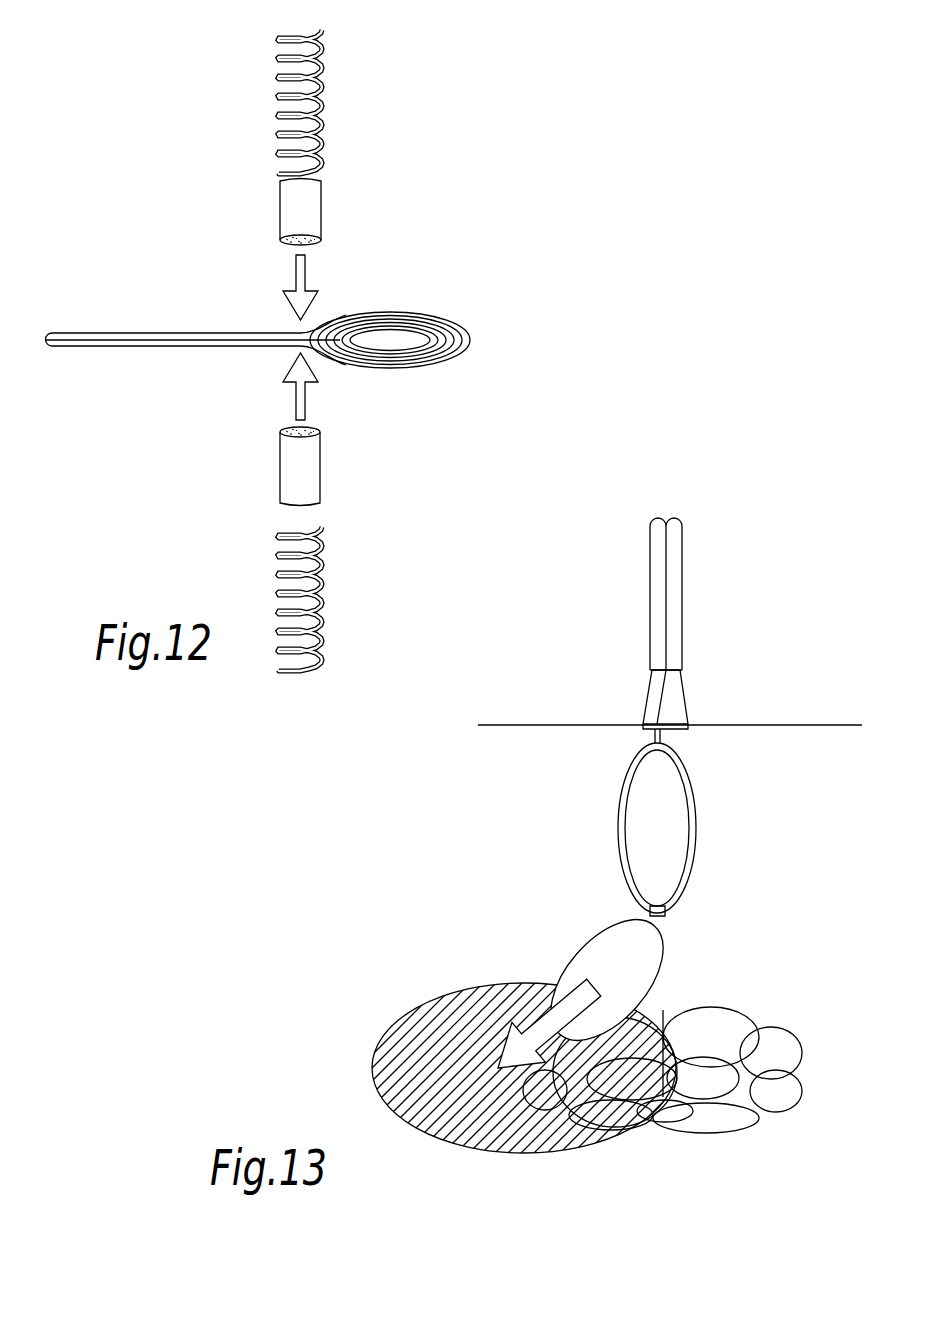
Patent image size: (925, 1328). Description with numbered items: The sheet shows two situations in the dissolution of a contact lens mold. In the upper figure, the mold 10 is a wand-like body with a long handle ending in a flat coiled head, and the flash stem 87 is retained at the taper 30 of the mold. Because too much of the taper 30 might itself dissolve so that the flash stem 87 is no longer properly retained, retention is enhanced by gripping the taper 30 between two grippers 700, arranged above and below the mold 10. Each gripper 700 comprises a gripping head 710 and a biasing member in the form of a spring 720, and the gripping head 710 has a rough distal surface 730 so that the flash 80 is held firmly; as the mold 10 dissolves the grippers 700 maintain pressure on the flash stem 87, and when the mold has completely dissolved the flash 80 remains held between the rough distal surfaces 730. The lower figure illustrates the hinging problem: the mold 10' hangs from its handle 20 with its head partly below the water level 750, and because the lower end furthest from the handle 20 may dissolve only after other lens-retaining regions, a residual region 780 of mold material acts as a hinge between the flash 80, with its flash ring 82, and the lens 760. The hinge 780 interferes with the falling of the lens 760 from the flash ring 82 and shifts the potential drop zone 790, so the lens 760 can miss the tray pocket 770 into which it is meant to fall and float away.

In FIG. 12, the gripper 700 is at (275, 350).
In FIG. 12, the spring 720 is at (325, 86).
In FIG. 12, the gripping head 710 is at (338, 342).
In FIG. 12, the rough distal surface 730 is at (313, 243).
In FIG. 12, the mold 10 is at (263, 323).
In FIG. 12, the taper 30 is at (281, 317).
In FIG. 13, the taper 30 is at (650, 696).
In FIG. 12, the flash stem 87 is at (276, 343).
In FIG. 13, the mold 10' is at (657, 732).
In FIG. 13, the handle 20 is at (663, 612).
In FIG. 13, the flash 80 is at (657, 838).
In FIG. 13, the flash ring 82 is at (624, 804).
In FIG. 13, the water level 750 is at (788, 722).
In FIG. 13, the lens 760 is at (607, 962).
In FIG. 13, the tray pocket 770 is at (759, 1118).
In FIG. 13, the residual region of mold material 780 is at (663, 913).
In FIG. 13, the drop zone 790 is at (472, 1122).